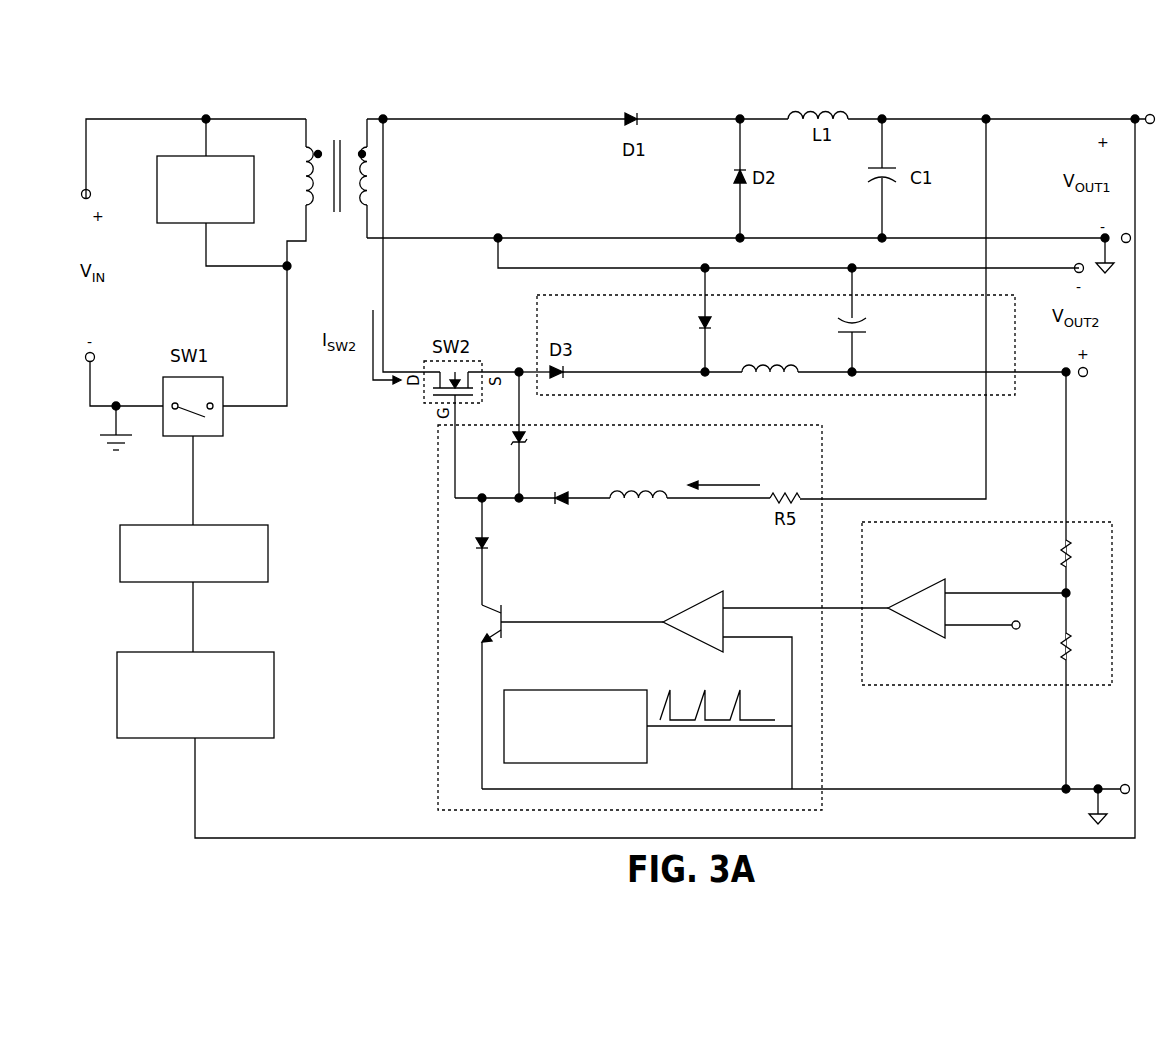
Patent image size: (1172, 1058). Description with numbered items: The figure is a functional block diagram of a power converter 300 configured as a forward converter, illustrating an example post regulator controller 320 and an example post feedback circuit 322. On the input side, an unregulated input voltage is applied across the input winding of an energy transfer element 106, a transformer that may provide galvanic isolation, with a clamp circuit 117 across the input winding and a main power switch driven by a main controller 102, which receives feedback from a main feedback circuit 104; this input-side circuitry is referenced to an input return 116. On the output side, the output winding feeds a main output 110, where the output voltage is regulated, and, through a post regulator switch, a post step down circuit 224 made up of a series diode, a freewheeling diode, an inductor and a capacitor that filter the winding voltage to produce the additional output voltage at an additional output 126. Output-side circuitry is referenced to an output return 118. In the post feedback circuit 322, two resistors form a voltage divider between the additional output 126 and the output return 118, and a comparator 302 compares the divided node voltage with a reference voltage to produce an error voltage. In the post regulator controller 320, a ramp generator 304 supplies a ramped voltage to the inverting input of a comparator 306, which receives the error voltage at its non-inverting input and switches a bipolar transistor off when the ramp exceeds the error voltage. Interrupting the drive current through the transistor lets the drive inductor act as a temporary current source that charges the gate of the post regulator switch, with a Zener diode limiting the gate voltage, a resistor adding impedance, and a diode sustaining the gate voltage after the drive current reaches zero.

The power converter 300 is at (756, 109).
The main output 110 is at (1148, 133).
The clamp circuit 117 is at (177, 225).
The energy transfer element 106 is at (338, 214).
The input return 116 is at (123, 455).
The main controller 102 is at (272, 560).
The main feedback circuit 104 is at (278, 696).
The post step down circuit 224 is at (530, 318).
The post regulator controller 320 is at (625, 591).
The post feedback circuit 322 is at (987, 580).
The additional output 126 is at (1085, 383).
The output return 118 is at (1098, 252).
The comparator 302 is at (916, 608).
The comparator 306 is at (693, 621).
The ramp generator 304 is at (552, 686).